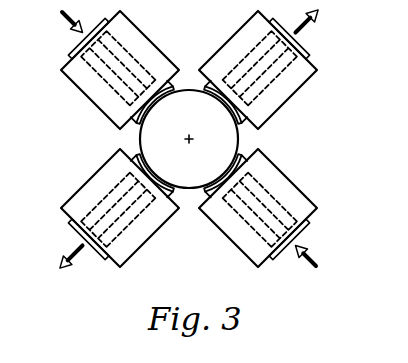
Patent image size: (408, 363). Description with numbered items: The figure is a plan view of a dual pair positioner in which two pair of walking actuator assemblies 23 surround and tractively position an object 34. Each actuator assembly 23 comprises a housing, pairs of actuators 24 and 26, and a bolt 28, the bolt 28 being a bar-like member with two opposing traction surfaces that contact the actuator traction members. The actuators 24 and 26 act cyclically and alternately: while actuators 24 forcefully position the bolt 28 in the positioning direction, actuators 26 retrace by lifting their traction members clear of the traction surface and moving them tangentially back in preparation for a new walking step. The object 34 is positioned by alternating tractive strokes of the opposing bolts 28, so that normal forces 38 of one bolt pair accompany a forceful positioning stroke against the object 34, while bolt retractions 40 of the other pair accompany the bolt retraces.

The actuator assembly 23 is at (80, 90).
The actuators 24 is at (92, 96).
The actuators 26 is at (112, 93).
The bolt 28 is at (100, 262).
The positioned object 34 is at (240, 130).
The normal forces 38 is at (63, 20).
The bolt retractions 40 is at (302, 25).